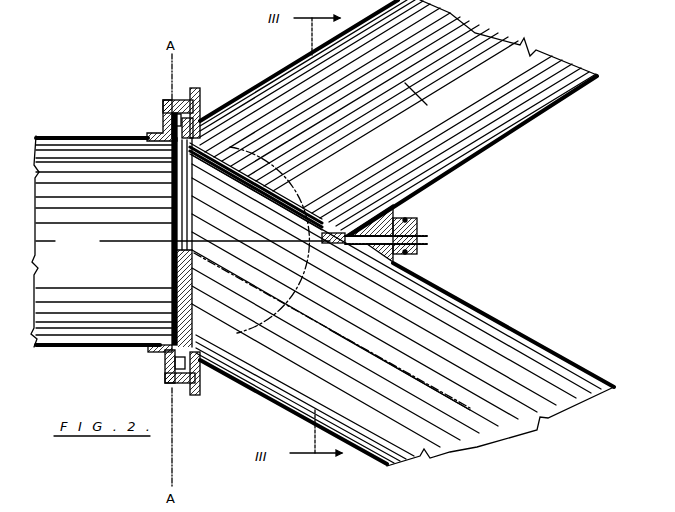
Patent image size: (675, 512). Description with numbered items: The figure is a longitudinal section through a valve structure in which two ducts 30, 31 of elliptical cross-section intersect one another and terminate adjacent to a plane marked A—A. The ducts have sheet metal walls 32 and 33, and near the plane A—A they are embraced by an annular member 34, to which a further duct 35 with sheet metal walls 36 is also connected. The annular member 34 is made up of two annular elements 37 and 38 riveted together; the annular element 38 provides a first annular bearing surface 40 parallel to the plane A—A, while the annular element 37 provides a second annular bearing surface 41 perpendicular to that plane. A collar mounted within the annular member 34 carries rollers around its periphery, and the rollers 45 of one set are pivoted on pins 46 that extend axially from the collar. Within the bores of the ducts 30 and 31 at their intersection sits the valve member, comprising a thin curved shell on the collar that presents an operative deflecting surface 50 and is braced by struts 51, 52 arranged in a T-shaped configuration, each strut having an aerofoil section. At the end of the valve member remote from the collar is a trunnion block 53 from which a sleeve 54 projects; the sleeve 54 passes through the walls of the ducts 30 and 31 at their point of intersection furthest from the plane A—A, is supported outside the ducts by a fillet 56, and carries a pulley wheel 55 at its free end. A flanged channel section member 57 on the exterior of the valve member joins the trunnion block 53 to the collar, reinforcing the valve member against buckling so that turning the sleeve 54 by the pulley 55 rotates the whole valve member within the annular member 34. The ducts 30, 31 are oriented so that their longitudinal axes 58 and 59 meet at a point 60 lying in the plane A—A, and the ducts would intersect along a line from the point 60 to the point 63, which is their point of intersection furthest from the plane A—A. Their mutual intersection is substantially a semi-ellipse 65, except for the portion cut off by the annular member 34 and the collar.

The duct 30 is at (398, 115).
The duct 31 is at (403, 310).
The sheet metal wall 32 is at (502, 152).
The sheet metal wall 33 is at (496, 321).
The annular member 34 is at (188, 100).
The further duct 35 is at (183, 243).
The sheet metal wall 36 is at (93, 135).
The annular element 37 is at (165, 110).
The annular element 38 is at (200, 92).
The first annular bearing surface 40 is at (201, 377).
The second annular bearing surface 41 is at (170, 100).
The roller 45 is at (172, 362).
The pin 46 is at (187, 372).
The operative deflecting surface 50 is at (293, 207).
The strut 51 is at (178, 234).
The strut 52 is at (178, 198).
The trunnion block 53 is at (322, 243).
The sleeve 54 is at (344, 243).
The pulley wheel 55 is at (420, 228).
The fillet 56 is at (380, 262).
The flanged channel section member 57 is at (307, 203).
The longitudinal axis 58 is at (427, 109).
The longitudinal axis 59 is at (402, 376).
The point 60 is at (173, 241).
The point 63 is at (349, 232).
The semi-ellipse 65 is at (252, 334).